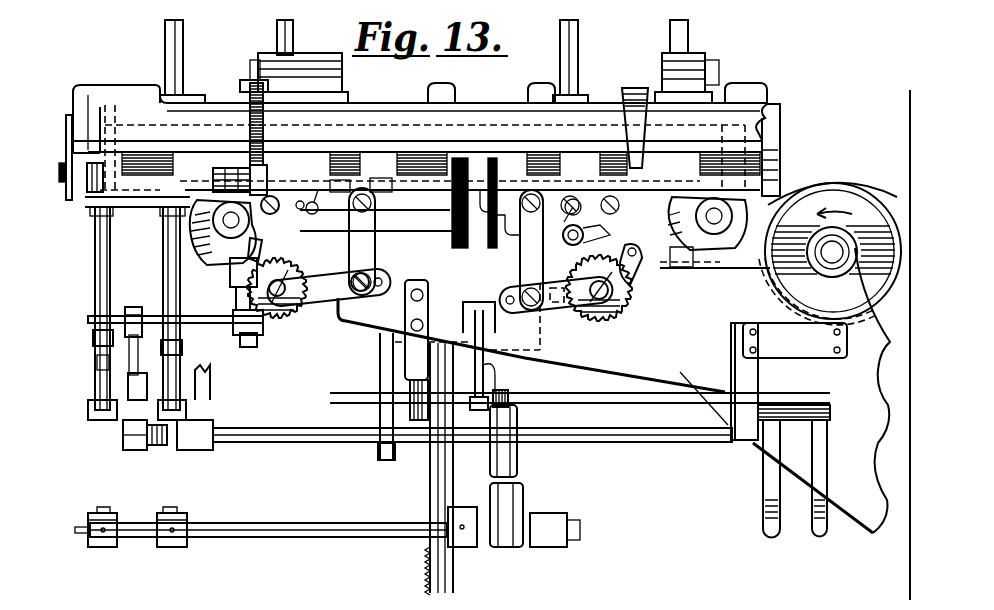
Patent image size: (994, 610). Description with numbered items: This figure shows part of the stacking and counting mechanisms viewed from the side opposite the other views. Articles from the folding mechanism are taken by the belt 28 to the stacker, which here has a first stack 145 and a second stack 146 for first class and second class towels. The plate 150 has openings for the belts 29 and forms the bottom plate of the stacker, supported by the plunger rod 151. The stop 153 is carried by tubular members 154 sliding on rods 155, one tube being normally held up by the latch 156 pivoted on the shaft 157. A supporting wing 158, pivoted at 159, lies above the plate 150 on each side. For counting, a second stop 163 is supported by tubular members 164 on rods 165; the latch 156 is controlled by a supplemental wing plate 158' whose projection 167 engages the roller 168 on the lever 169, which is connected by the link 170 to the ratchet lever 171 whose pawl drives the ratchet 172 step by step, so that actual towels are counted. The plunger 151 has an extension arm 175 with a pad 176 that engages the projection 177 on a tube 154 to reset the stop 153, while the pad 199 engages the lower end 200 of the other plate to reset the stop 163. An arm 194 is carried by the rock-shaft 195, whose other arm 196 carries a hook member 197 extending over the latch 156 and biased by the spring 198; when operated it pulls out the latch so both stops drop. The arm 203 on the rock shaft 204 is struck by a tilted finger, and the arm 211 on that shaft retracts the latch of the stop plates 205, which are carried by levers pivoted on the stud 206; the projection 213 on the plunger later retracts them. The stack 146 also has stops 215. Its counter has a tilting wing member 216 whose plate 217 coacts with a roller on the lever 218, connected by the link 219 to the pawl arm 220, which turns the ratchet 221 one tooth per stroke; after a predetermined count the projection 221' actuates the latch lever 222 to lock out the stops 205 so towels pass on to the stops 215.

The belt 28 is at (895, 196).
The belts 29 is at (752, 220).
The first stack 145 is at (275, 32).
The second stack 146 is at (580, 36).
The plate 150 is at (380, 180).
The plunger rod 151 is at (523, 458).
The stop 153 is at (117, 118).
The tubular members 154 is at (172, 260).
The rods 155 is at (173, 375).
The latch 156 is at (198, 322).
The shaft 157 is at (246, 346).
The supporting member or wing 158 is at (772, 132).
The supplemental wing plate 158' is at (275, 106).
The pivot 159 is at (87, 170).
The second stop 163 is at (66, 125).
The tubular members 164 is at (98, 287).
The rods 165 is at (110, 362).
The projection 167 is at (247, 168).
The roller 168 is at (268, 190).
The lever 169 is at (338, 185).
The link 170 is at (365, 242).
The ratchet lever 171 is at (305, 300).
The ratchet 172 is at (290, 312).
The extension arm 175 is at (284, 530).
The pad 176 is at (180, 507).
The projection 177 is at (182, 340).
The arm 194 is at (770, 525).
The rock-shaft 195 is at (642, 436).
The arm 196 is at (136, 358).
The hook member 197 is at (134, 310).
The spring 198 is at (160, 443).
The pad 199 is at (96, 508).
The lower end 200 is at (96, 346).
The arm 203 is at (818, 527).
The rock shaft 204 is at (610, 403).
The stop plates 205 is at (497, 165).
The stud 206 is at (600, 393).
The arm 211 is at (479, 350).
The projection 213 is at (460, 507).
The stops 215 is at (462, 157).
The tilting wing member 216 is at (628, 130).
The plate 217 is at (655, 160).
The lever 218 is at (556, 205).
The link 219 is at (530, 265).
The pawl arm 220 is at (587, 318).
The ratchet 221 is at (659, 287).
The projection 221' is at (601, 295).
The latch lever 222 is at (457, 218).